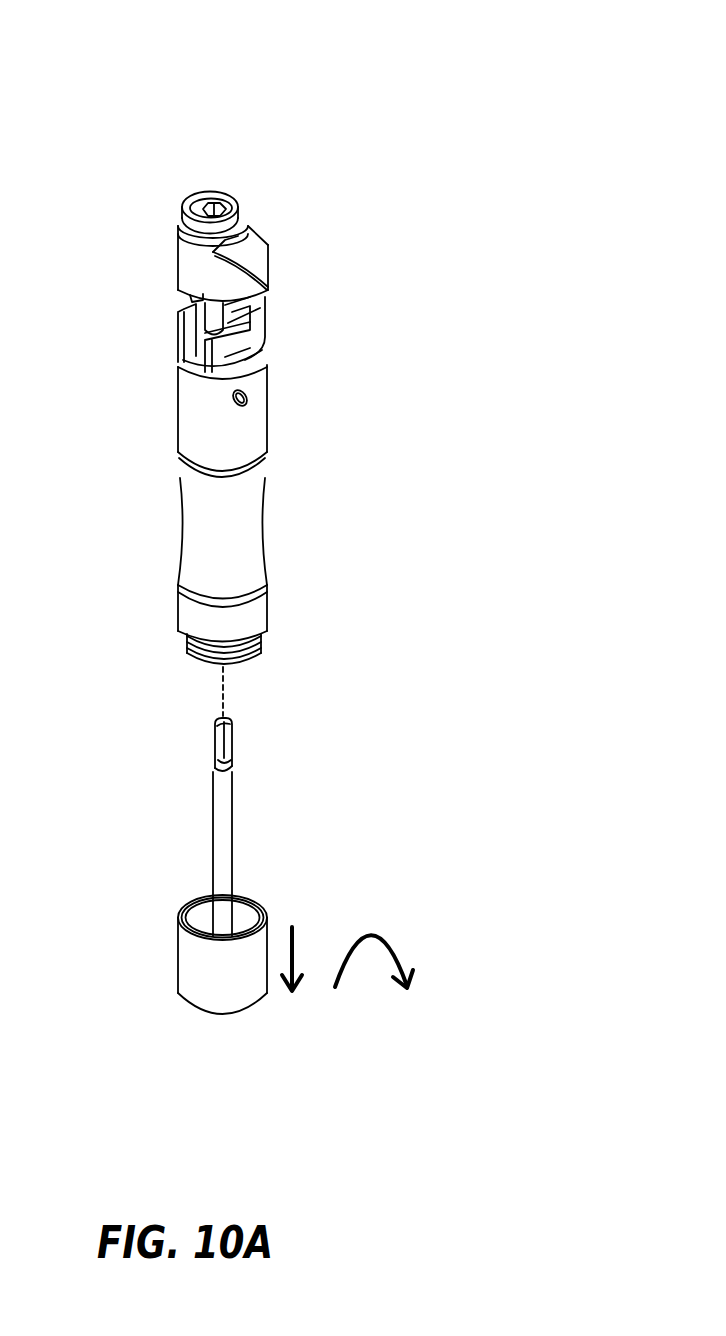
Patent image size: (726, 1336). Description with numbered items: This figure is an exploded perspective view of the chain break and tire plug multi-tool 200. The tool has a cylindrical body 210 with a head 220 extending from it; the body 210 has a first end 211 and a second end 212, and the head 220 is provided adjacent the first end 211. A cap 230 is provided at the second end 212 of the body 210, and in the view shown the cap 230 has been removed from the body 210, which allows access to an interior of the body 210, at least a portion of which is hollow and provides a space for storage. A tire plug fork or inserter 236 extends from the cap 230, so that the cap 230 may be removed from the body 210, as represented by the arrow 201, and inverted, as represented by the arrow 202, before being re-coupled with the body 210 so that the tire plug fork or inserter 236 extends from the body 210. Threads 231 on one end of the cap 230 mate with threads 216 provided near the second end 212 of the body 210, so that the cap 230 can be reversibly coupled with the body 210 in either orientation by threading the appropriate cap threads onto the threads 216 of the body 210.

The chain break and tire plug multi-tool 200 is at (406, 71).
The head 220 is at (166, 176).
The first end 211 is at (143, 368).
The cylindrical body 210 is at (295, 524).
The second end 212 is at (148, 614).
The threads 216 is at (197, 652).
The tire plug fork or inserter 236 is at (218, 752).
The cap 230 is at (150, 974).
The threads 231 is at (257, 902).
The arrow 201 is at (292, 975).
The arrow 202 is at (374, 947).